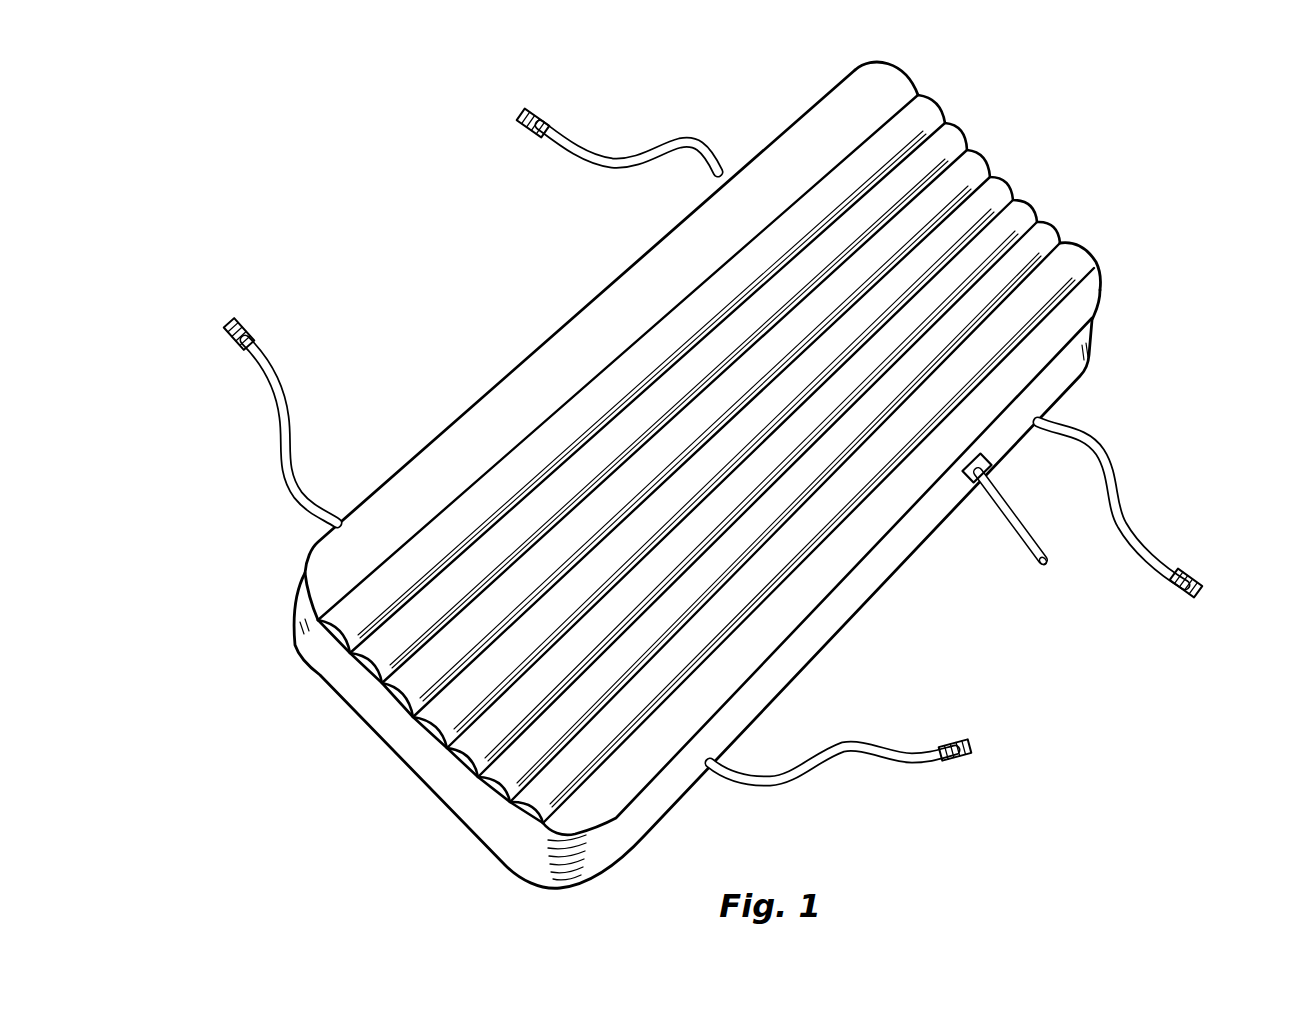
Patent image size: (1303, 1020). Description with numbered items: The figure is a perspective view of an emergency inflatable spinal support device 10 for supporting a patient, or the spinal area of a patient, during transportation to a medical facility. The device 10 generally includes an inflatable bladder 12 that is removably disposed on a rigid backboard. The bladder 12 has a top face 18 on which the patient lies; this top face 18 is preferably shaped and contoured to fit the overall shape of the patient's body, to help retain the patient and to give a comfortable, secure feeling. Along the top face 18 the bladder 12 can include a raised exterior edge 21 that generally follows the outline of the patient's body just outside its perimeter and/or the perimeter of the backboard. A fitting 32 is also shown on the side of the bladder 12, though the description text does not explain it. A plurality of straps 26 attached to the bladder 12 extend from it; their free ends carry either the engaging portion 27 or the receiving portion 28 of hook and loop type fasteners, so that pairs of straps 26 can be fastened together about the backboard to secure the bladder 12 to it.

The emergency inflatable spinal support device 10 is at (731, 475).
The inflatable bladder 12 is at (413, 758).
The top face 18 is at (748, 396).
The raised exterior edge 21 is at (480, 422).
The straps 26 is at (597, 157).
The engaging portion 27 is at (547, 113).
The receiving portion 28 is at (1190, 573).
The valve 32 is at (1030, 537).